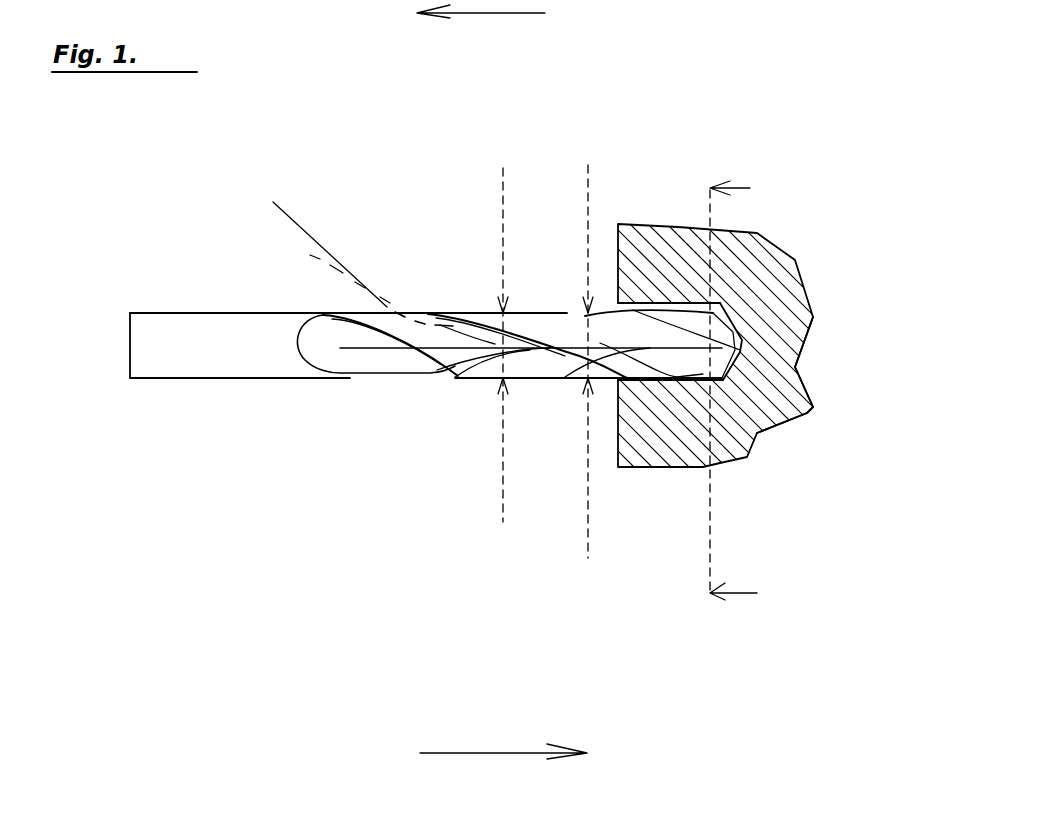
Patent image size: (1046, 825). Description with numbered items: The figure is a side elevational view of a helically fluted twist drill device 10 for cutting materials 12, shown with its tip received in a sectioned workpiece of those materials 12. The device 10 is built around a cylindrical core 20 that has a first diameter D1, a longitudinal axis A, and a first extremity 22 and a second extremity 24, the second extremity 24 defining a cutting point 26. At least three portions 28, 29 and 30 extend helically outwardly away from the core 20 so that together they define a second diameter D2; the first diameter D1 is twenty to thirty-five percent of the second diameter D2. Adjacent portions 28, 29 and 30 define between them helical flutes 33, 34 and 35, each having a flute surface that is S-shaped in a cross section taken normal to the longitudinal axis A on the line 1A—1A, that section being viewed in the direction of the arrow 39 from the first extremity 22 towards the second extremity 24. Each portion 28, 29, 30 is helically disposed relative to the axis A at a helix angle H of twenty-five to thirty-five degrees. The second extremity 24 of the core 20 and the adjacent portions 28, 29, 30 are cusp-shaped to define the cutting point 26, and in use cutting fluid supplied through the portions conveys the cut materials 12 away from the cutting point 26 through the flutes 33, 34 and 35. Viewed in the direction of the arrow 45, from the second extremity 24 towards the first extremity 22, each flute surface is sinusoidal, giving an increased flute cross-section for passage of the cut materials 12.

The helically fluted twist drill device 10 is at (408, 218).
The first extremity 22 is at (300, 313).
The cylindrical core 20 is at (527, 378).
The portion 30 is at (400, 362).
The helical flute 35 is at (360, 363).
The helical flute 34 is at (470, 366).
The portion 29 is at (560, 377).
The helical flute 33 is at (692, 353).
The materials 12 is at (655, 325).
The second extremity 24 is at (716, 362).
The portion 28 is at (717, 305).
The cutting point 26 is at (807, 413).
The longitudinal axis A is at (340, 352).
The helix angle H is at (357, 250).
The first diameter D1 is at (580, 380).
The second diameter D2 is at (507, 298).
The section line 1A— 1A is at (760, 395).
The arrow 45 is at (485, 13).
The arrow 39 is at (472, 752).